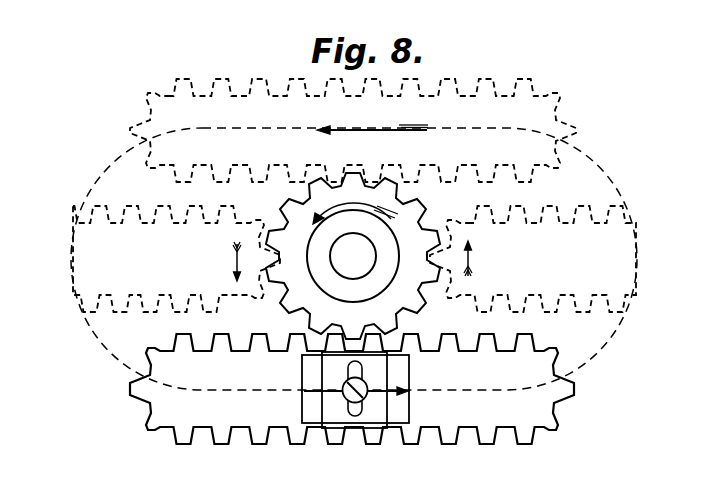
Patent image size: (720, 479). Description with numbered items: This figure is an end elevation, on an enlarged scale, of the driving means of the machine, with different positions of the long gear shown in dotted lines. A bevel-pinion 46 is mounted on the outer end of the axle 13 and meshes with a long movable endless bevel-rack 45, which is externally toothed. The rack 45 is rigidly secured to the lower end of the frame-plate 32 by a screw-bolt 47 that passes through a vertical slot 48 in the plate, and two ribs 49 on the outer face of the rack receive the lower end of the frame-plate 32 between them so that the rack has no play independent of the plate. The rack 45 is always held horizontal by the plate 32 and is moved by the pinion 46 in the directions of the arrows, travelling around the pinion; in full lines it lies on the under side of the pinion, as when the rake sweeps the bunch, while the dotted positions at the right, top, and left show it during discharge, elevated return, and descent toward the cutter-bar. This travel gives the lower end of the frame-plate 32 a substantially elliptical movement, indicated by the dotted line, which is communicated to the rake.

The axle 13 is at (353, 256).
The bevel-pinion 46 is at (353, 256).
The movable endless bevel-rack 45 is at (556, 386).
The ribs 49 is at (313, 370).
The frame-plate 32 is at (333, 408).
The vertical slot 48 is at (361, 374).
The screw-bolt 47 is at (349, 419).